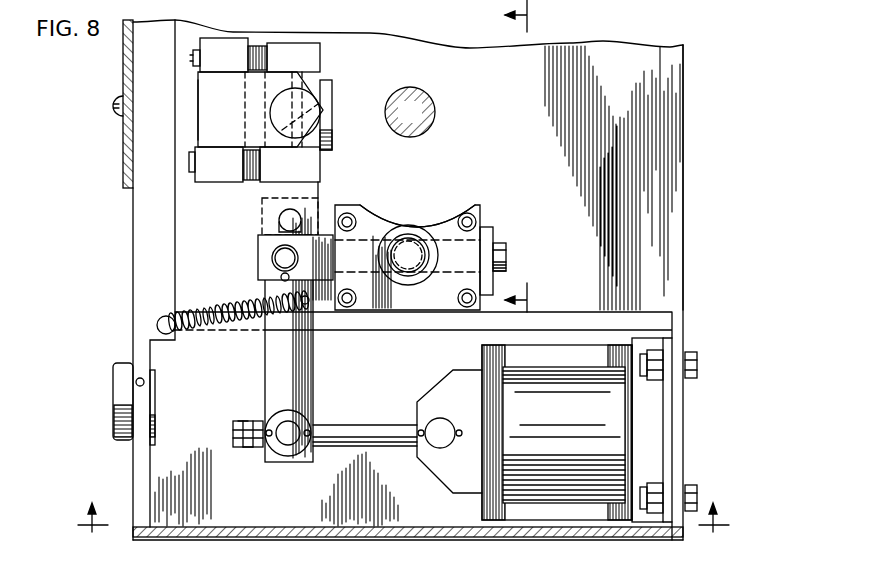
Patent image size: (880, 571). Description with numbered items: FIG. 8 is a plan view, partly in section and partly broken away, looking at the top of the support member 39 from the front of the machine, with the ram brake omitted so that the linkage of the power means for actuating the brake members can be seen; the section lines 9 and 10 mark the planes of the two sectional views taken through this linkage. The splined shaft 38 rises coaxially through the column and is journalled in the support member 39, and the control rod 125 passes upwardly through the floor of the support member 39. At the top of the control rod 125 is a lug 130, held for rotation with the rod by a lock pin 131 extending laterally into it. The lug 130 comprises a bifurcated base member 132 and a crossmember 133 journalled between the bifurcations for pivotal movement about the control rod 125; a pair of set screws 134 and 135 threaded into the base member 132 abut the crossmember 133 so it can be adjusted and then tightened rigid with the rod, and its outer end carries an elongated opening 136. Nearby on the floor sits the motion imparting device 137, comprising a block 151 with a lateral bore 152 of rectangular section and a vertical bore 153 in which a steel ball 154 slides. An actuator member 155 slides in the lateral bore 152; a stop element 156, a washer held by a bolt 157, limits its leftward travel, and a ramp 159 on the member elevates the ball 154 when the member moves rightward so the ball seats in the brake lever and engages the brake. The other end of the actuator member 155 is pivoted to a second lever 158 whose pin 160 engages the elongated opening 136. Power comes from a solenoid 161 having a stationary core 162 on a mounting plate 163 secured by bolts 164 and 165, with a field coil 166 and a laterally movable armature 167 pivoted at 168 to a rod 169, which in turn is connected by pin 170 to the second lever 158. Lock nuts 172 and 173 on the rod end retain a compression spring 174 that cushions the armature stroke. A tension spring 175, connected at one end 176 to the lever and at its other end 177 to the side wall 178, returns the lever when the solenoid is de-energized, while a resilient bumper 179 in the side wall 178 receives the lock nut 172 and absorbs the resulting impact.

The section line 9- 9 is at (403, 533).
The section line 10- 10 is at (532, 156).
The splined shaft 38 is at (400, 123).
The support member 39 is at (523, 133).
The control rod 125 is at (278, 115).
The lug 130 is at (193, 100).
The lock pin 131 is at (326, 118).
The base member 132 is at (206, 113).
The crossmember 133 is at (318, 57).
The set screw 134 is at (196, 58).
The set screw 135 is at (191, 172).
The elongated opening 136 is at (300, 206).
The motion imparting device 137 is at (437, 205).
The block 151 is at (457, 208).
The lateral bore 152 is at (490, 246).
The vertical bore 153 is at (408, 225).
The ball 154 is at (408, 246).
The actuator member 155 is at (312, 302).
The stop element 156 is at (495, 285).
The bolt 157 is at (273, 259).
The second lever 158 is at (305, 365).
The ramp 159 is at (430, 258).
The pin 160 is at (281, 223).
The solenoid 161 is at (476, 351).
The stationary core 162 is at (486, 507).
The mounting plate 163 is at (680, 343).
The bolt 164 is at (698, 365).
The bolt 165 is at (698, 498).
The field coil 166 is at (562, 437).
The armature 167 is at (440, 466).
The pivot connection 168 is at (438, 420).
The rod 169 is at (360, 424).
The pin 170 is at (288, 442).
The lock nut 172 is at (232, 437).
The lock nut 173 is at (246, 420).
The compression spring 174 is at (249, 448).
The tension spring 175 is at (215, 325).
The spring end 176 is at (301, 299).
The spring end 177 is at (170, 334).
The side wall 178 is at (145, 333).
The resilient bumper 179 is at (114, 428).